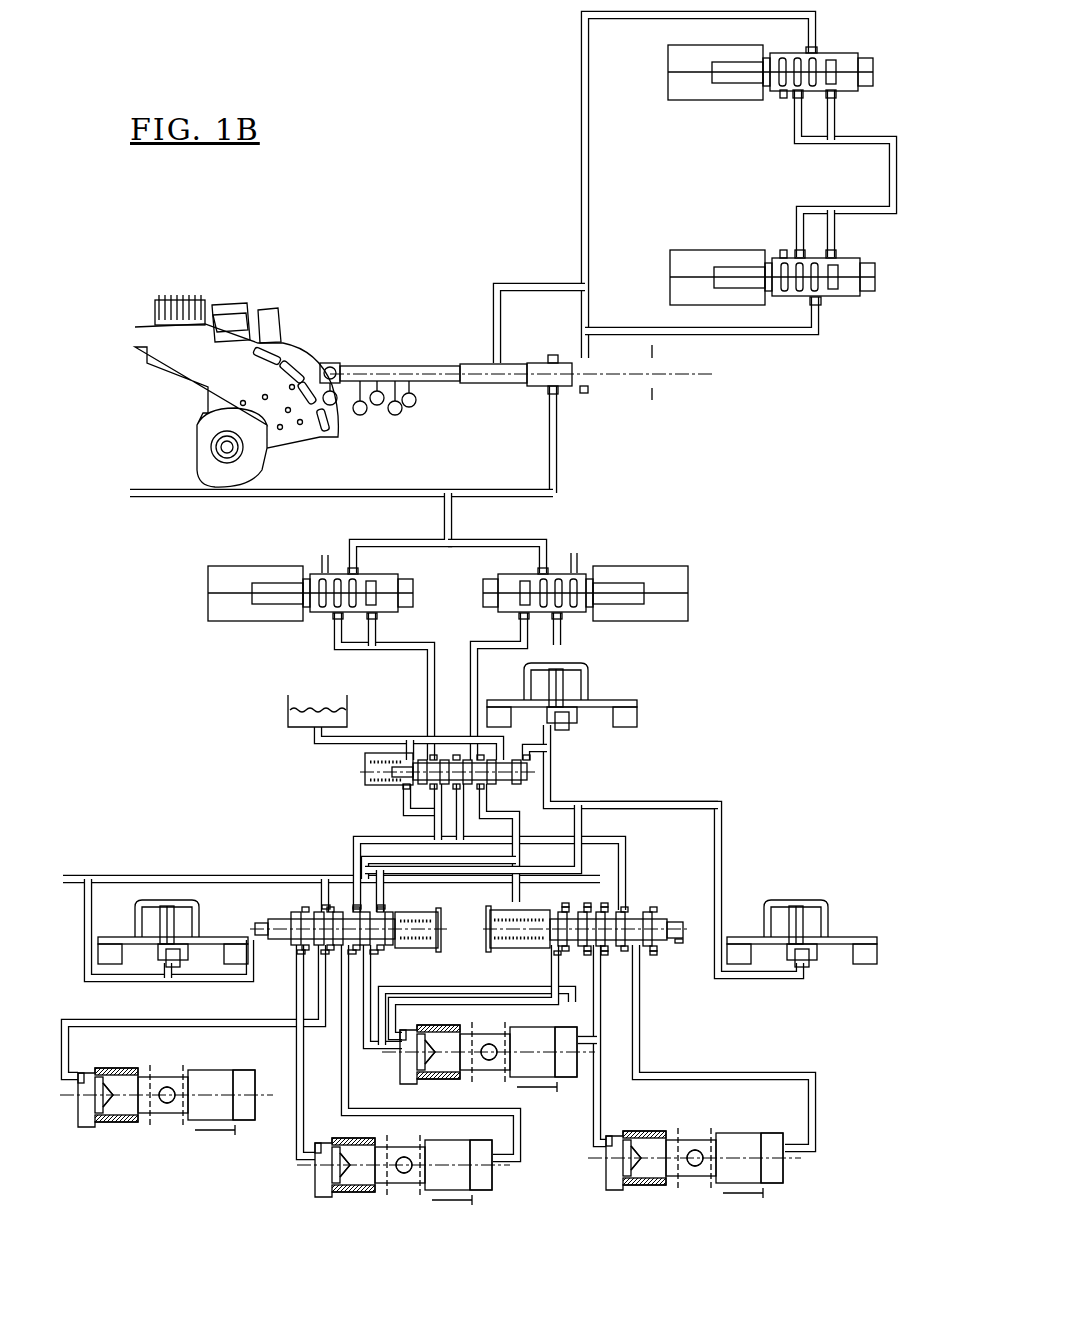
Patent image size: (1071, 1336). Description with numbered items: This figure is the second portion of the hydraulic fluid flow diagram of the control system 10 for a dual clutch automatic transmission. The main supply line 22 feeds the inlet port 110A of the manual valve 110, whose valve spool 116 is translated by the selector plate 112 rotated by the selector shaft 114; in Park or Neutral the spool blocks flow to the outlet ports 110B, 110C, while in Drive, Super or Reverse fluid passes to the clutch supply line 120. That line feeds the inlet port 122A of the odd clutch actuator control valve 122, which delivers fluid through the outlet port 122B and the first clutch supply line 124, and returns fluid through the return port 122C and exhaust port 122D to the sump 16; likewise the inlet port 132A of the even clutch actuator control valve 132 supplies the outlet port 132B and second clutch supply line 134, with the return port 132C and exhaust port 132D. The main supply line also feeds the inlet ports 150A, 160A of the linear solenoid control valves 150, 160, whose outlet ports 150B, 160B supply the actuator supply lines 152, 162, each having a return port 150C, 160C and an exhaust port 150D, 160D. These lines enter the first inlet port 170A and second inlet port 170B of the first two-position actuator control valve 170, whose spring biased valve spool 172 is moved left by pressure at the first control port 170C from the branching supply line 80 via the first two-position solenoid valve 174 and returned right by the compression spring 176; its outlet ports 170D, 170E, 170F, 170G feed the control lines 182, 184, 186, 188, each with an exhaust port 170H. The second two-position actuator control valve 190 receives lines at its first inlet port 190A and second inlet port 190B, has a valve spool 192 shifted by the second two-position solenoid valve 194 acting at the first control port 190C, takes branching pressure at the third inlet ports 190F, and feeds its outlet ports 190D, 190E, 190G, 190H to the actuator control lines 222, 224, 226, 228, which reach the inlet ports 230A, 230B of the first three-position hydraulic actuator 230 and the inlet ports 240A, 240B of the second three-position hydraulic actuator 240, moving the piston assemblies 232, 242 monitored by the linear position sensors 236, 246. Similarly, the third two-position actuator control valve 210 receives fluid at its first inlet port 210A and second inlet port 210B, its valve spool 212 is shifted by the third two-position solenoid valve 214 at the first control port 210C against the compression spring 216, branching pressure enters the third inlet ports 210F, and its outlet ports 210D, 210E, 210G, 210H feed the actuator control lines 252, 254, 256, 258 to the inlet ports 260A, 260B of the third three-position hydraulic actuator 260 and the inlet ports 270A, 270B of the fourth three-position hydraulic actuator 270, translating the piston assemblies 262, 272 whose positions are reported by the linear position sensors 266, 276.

The hydraulic control system 10 is at (398, 162).
The sump 16 is at (290, 712).
The main supply line 22 is at (153, 498).
The first branching supply line 80 is at (712, 800).
The manual valve 110 is at (537, 388).
The inlet port 110A is at (558, 395).
The outlet port 110B is at (500, 362).
The outlet port 110C is at (586, 358).
The selector plate 112 is at (288, 422).
The selector shaft 114 is at (222, 448).
The valve spool 116 is at (483, 365).
The clutch supply line 120 is at (578, 170).
The first or odd clutch actuator control valve 122 is at (740, 133).
The inlet port 122A is at (815, 48).
The outlet port 122B is at (830, 96).
The return port 122C is at (797, 96).
The exhaust port 122D is at (783, 93).
The first clutch supply line 124 is at (880, 145).
The second or even clutch actuator control valve 132 is at (735, 220).
The inlet port 132A is at (815, 300).
The outlet port 132B is at (830, 258).
The return port 132C is at (797, 255).
The exhaust port 132D is at (783, 253).
The second clutch supply line 134 is at (818, 206).
The first high capacity linear solenoid control valve 150 is at (198, 606).
The inlet port 150A is at (355, 575).
The outlet port 150B is at (372, 616).
The return port 150C is at (338, 616).
The exhaust port 150D is at (325, 572).
The first actuator supply line 152 is at (424, 688).
The second high capacity linear solenoid control valve 160 is at (688, 552).
The inlet port 160A is at (543, 575).
The outlet port 160B is at (524, 616).
The return port 160C is at (557, 616).
The exhaust port 160D is at (575, 572).
The second actuator supply line 162 is at (498, 676).
The first two-position actuator control valve 170 is at (290, 758).
The first inlet port 170A is at (410, 755).
The second inlet port 170B is at (456, 755).
The first control port 170C is at (530, 760).
The first outlet port 170D is at (408, 789).
The second outlet port 170E is at (440, 794).
The third outlet port 170F is at (461, 788).
The fourth outlet port 170G is at (485, 789).
The exhaust ports 170H is at (479, 755).
The valve spool 172 is at (395, 771).
The first two-position solenoid valve 174 is at (555, 700).
The compression spring 176 is at (385, 781).
The first control line 182 is at (567, 845).
The second control line 184 is at (345, 838).
The third control line 186 is at (635, 828).
The fourth control line 188 is at (455, 876).
The second two-position actuator control valve 190 is at (273, 843).
The first inlet port 190A is at (381, 910).
The second inlet port 190B is at (327, 910).
The first control port 190C is at (258, 932).
The first outlet port 190D is at (303, 952).
The second outlet port 190E is at (352, 952).
The third inlet ports 190F is at (356, 910).
The third outlet port 190G is at (325, 952).
The fourth outlet port 190H is at (375, 950).
The valve spool 192 is at (440, 944).
The second two-position solenoid valve 194 is at (168, 905).
The third two-position actuator control valve 210 is at (752, 888).
The first inlet port 210A is at (588, 908).
The second inlet port 210B is at (605, 908).
The first control port 210C is at (682, 944).
The first outlet port 210D is at (612, 1046).
The second outlet port 210E is at (625, 950).
The third inlet ports 210F is at (566, 908).
The third outlet port 210G is at (562, 1040).
The fourth outlet port 210H is at (605, 950).
The valve spool 212 is at (550, 929).
The third two-position solenoid valve 214 is at (800, 942).
The compression spring 216 is at (527, 948).
The first actuator control line 222 is at (305, 1114).
The second actuator control line 224 is at (380, 1115).
The third actuator control line 226 is at (143, 1020).
The fourth actuator control line 228 is at (386, 1036).
The first three-position hydraulic actuator 230 is at (493, 1195).
The first inlet port 230A is at (303, 1158).
The second inlet port 230B is at (494, 1160).
The first piston assembly 232 is at (357, 1173).
The first linear position sensor 236 is at (404, 1180).
The second three-position hydraulic actuator 240 is at (120, 1168).
The first inlet port 240A is at (72, 1076).
The second inlet port 240B is at (258, 1092).
The second piston assembly 242 is at (118, 1102).
The linear position sensor 246 is at (167, 1105).
The first actuator control line 252 is at (600, 1126).
The second actuator control line 254 is at (815, 1094).
The third actuator control line 256 is at (490, 986).
The fourth actuator control line 258 is at (688, 1142).
The third three-position hydraulic actuator 260 is at (793, 1203).
The first inlet port 260A is at (598, 1150).
The second inlet port 260B is at (787, 1150).
The third piston assembly 262 is at (672, 1142).
The third linear position sensor 266 is at (697, 1168).
The fourth three-position hydraulic actuator 270 is at (577, 1090).
The first inlet port 270A is at (398, 1044).
The second inlet port 270B is at (583, 1058).
The fourth piston assembly 272 is at (437, 1064).
The fourth linear position sensor 276 is at (491, 1063).